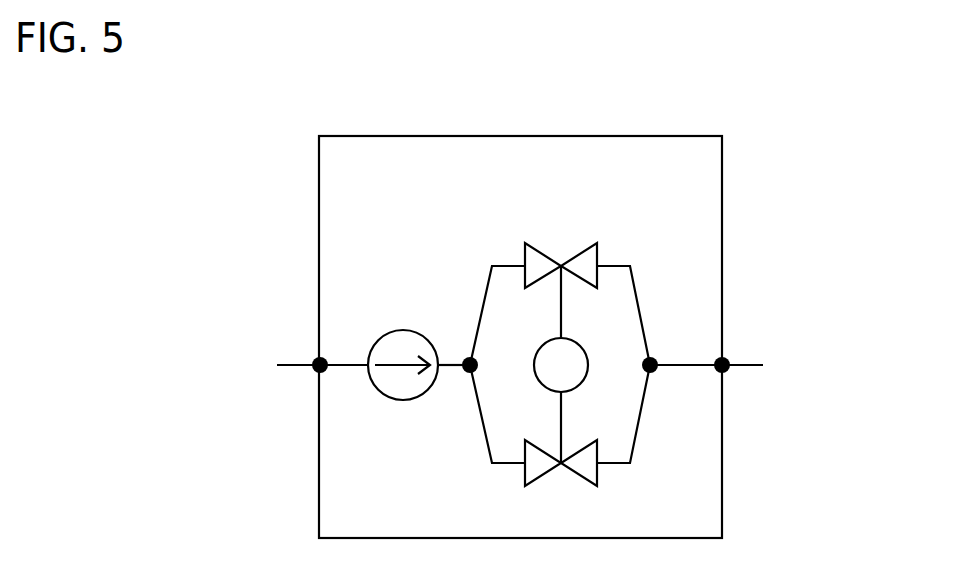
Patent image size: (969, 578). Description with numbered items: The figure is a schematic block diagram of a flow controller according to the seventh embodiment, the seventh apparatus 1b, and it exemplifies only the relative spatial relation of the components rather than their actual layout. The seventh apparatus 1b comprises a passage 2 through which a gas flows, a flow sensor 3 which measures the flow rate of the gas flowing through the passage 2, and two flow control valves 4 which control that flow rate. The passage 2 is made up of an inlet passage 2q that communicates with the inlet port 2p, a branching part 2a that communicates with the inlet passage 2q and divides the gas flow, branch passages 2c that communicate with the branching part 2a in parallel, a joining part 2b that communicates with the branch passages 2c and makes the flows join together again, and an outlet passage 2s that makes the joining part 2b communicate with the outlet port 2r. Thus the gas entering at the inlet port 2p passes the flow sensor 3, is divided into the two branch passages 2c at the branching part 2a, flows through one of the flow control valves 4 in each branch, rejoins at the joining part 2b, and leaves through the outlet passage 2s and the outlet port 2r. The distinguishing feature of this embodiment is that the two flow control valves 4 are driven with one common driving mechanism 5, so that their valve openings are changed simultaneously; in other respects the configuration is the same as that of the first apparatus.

The seventh apparatus 1b is at (700, 135).
The passage 2 is at (860, 380).
The branching part 2a is at (466, 372).
The joining part 2b is at (653, 358).
The branch passages 2c is at (485, 296).
The inlet port 2p is at (316, 372).
The inlet passage 2q is at (355, 366).
The outlet port 2r is at (727, 372).
The outlet passage 2s is at (683, 366).
The flow sensor 3 is at (400, 330).
The flow control valves 4 is at (522, 248).
The driving mechanism 5 is at (590, 372).